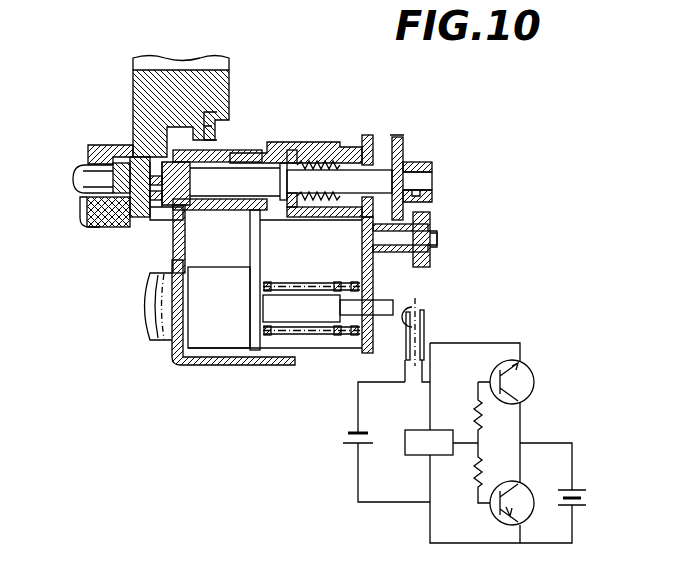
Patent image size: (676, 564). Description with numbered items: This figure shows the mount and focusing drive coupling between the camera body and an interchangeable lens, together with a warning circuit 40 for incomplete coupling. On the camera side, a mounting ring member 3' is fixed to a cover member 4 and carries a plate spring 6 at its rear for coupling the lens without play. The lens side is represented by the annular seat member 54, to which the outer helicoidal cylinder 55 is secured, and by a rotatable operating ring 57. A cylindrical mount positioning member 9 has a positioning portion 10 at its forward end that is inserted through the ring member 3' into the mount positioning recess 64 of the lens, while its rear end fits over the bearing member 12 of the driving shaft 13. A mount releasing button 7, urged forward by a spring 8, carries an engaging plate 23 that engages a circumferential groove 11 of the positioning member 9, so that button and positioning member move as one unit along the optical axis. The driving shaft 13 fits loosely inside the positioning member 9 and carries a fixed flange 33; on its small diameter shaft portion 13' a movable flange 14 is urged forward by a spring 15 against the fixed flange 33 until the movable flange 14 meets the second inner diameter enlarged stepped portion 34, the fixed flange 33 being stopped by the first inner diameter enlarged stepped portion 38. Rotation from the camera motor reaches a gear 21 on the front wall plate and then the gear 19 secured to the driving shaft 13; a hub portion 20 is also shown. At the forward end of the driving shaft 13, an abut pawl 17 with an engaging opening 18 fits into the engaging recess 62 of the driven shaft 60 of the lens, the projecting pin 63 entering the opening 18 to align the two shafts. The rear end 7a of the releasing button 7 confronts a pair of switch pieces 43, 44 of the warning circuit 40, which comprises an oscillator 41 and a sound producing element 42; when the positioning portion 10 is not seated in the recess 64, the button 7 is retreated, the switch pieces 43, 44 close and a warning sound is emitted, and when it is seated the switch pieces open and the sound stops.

The mounting ring member 3' is at (181, 64).
The annular seat member 54 is at (190, 82).
The plate spring 6 is at (221, 125).
The abut pawl 17 is at (132, 98).
The outer helicoidal cylinder 55 is at (108, 145).
The circumferential groove 11 is at (257, 148).
The second inner diameter enlarged stepped portion 34 is at (268, 142).
The bearing member 12 is at (343, 145).
The mount positioning member 9 is at (218, 208).
The first inner diameter enlarged stepped portion 38 is at (297, 217).
The movable flange 14 is at (290, 152).
The spring 15 is at (315, 160).
The fixed flange 33 is at (282, 178).
The small diameter shaft portion 13' is at (340, 148).
The driving shaft 13 is at (235, 182).
The gear 19 is at (403, 145).
The hub 20 is at (392, 241).
The gear 21 is at (432, 260).
The driven shaft 60 is at (80, 186).
The engaging recess 62 is at (112, 218).
The operating ring 57 is at (80, 210).
The projecting pin 63 is at (80, 224).
The positioning portion 10 is at (150, 213).
The mount positioning recess 64 is at (159, 213).
The engaging opening 18 is at (183, 206).
The engaging plate 23 is at (256, 223).
The cover member 4 is at (175, 362).
The mount releasing button 7 is at (157, 338).
The spring 8 is at (333, 334).
The rear end 7a is at (392, 318).
The switch piece 44 is at (400, 322).
The switch piece 43 is at (425, 334).
The warning circuit 40 is at (541, 351).
The oscillator 41 is at (420, 433).
The sound producing element 42 is at (560, 490).